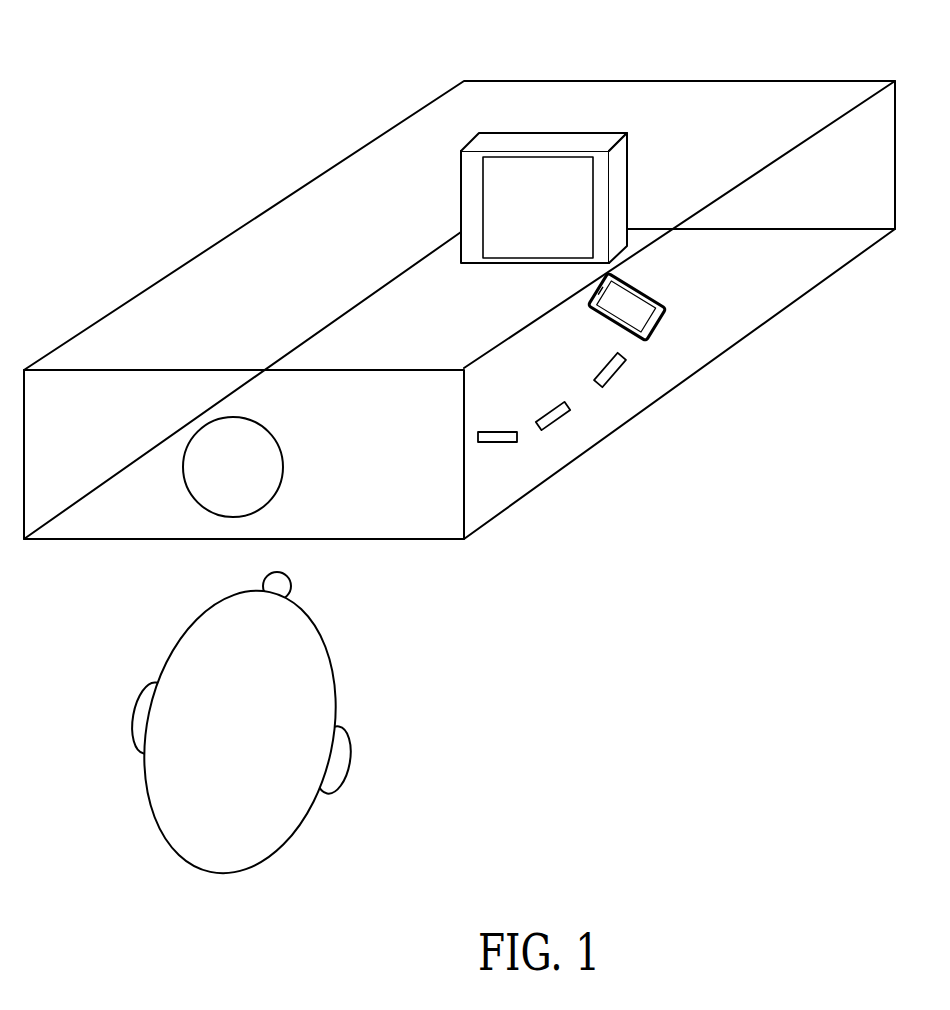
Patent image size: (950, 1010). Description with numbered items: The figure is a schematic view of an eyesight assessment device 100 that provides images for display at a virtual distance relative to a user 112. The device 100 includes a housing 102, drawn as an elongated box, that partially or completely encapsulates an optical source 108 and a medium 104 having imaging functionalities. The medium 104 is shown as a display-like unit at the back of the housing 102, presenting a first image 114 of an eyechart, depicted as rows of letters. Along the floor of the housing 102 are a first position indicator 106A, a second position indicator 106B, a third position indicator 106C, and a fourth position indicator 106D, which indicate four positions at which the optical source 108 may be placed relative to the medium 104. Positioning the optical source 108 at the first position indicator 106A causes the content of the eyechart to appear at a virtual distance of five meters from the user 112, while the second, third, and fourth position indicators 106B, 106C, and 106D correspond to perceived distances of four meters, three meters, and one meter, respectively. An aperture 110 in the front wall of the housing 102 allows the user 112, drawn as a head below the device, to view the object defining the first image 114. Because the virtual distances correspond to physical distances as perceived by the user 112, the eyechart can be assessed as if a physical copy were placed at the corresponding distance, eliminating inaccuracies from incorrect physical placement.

The eyesight assessment device 100 is at (234, 76).
The housing 102 is at (638, 82).
The medium 104 is at (547, 133).
The first position indicator 106A is at (660, 320).
The second position indicator 106B is at (614, 374).
The third position indicator 106C is at (553, 423).
The fourth position indicator 106D is at (498, 442).
The optical source 108 is at (637, 285).
The aperture 110 is at (195, 505).
The user 112 is at (248, 873).
The first image 114 is at (483, 196).